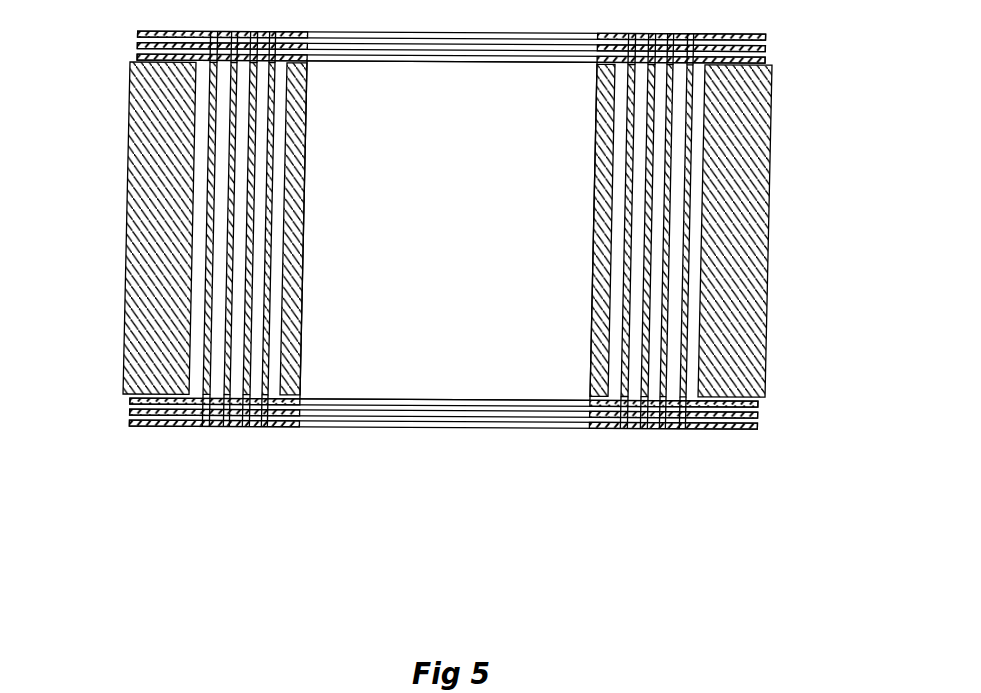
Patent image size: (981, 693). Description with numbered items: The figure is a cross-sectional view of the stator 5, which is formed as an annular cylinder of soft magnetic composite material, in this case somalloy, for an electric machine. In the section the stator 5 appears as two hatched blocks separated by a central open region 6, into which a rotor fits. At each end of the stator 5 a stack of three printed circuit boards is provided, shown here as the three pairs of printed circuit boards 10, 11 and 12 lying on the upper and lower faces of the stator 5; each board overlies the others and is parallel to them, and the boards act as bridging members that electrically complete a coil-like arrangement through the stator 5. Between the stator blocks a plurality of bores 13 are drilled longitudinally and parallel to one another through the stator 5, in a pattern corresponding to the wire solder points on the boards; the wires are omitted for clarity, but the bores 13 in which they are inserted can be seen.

The stator 5 is at (158, 240).
The cavity / flow channel 6 is at (442, 353).
The printed circuit board 10 is at (765, 59).
The printed circuit board 11 is at (765, 47).
The printed circuit board 12 is at (765, 36).
The bores 13 is at (225, 390).